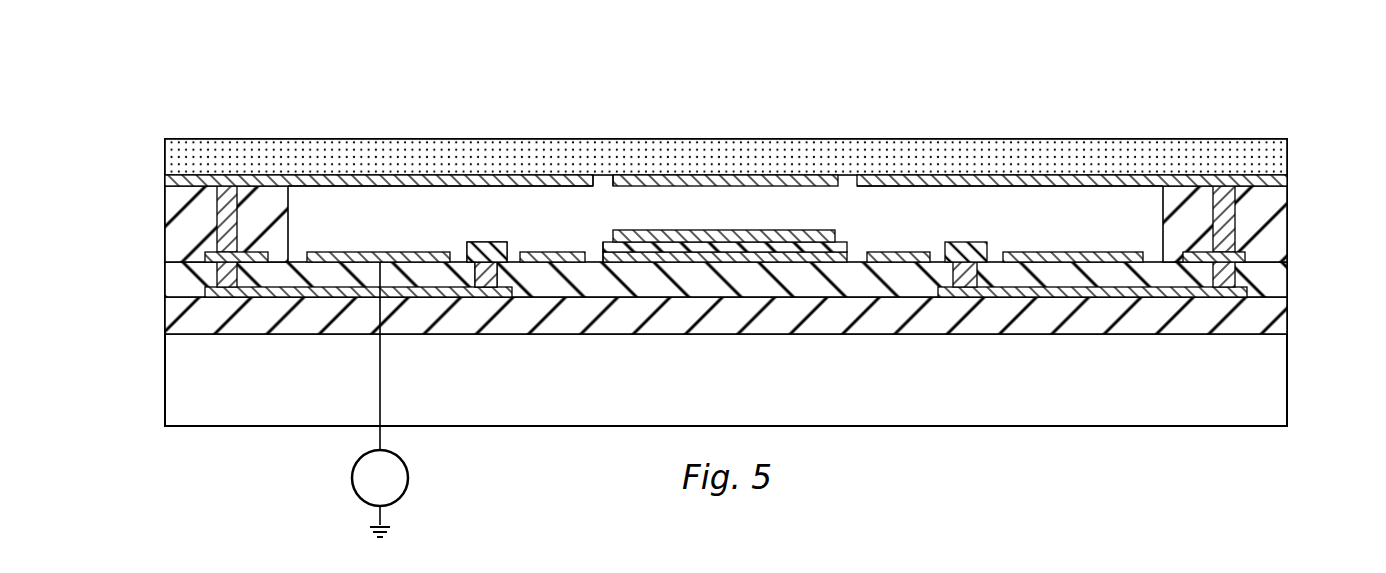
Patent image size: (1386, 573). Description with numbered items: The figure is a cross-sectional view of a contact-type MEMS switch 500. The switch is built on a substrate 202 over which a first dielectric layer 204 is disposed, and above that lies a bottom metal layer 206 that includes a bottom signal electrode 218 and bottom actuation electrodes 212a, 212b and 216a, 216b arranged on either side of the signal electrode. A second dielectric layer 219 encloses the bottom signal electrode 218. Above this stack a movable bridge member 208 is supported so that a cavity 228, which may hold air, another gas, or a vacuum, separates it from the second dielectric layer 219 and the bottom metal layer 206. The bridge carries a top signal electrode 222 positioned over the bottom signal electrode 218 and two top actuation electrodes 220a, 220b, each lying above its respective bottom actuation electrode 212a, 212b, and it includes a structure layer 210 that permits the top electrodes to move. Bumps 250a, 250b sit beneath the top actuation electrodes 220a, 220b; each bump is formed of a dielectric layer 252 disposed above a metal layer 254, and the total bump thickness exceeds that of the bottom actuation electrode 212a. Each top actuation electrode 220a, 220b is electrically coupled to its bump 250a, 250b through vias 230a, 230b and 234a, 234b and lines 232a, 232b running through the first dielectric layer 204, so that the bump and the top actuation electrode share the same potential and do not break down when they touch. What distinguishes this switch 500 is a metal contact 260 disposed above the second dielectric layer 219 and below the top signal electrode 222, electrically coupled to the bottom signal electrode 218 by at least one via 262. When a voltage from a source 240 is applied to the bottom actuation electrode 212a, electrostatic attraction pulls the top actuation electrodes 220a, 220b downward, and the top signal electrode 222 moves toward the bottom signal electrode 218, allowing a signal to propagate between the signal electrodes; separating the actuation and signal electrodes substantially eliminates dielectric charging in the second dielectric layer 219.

The contact-type MEMS switch 500 is at (1124, 80).
The substrate 202 is at (1287, 383).
The first dielectric layer 204 is at (165, 317).
The bottom metal layer 206 is at (1260, 252).
The movable bridge member 208 is at (1303, 180).
The structure layer 210 is at (1288, 155).
The bottom actuation electrode 212a is at (339, 254).
The bottom actuation electrode 212b is at (1042, 254).
The bottom actuation electrode 216a is at (545, 254).
The bottom actuation electrode 216b is at (903, 254).
The bottom signal electrode 218 is at (735, 258).
The second dielectric layer 219 is at (597, 248).
The top actuation electrode 220a is at (165, 182).
The top actuation electrode 220b is at (1110, 180).
The top signal electrode 222 is at (693, 182).
The cavity 228 is at (572, 212).
The via 230a is at (223, 215).
The via 230b is at (1237, 275).
The line 232a is at (290, 293).
The line 232b is at (1125, 292).
The via 234a is at (488, 285).
The via 234b is at (965, 290).
The source 240 is at (352, 478).
The bump 250a is at (498, 224).
The bump 250b is at (970, 220).
The dielectric layer 252 is at (468, 246).
The metal layer 254 is at (470, 268).
The metal contact 260 is at (713, 237).
The via 262 is at (788, 247).